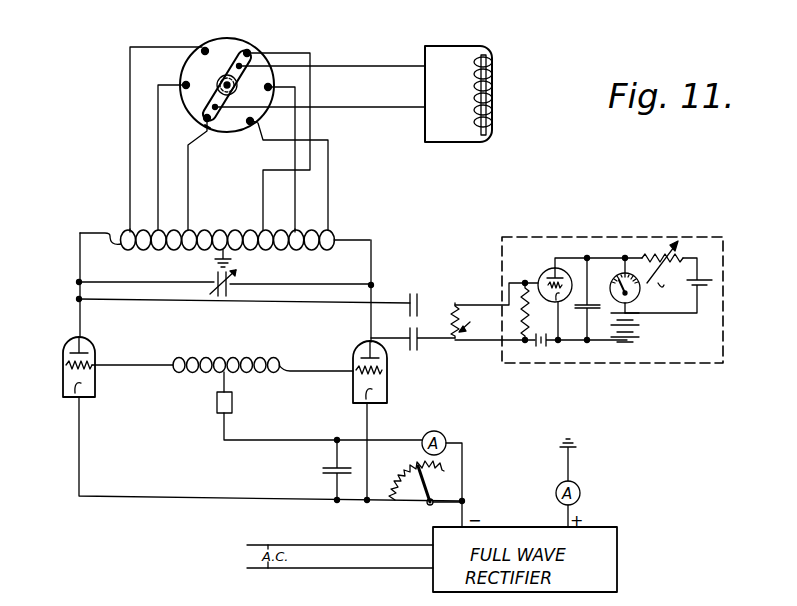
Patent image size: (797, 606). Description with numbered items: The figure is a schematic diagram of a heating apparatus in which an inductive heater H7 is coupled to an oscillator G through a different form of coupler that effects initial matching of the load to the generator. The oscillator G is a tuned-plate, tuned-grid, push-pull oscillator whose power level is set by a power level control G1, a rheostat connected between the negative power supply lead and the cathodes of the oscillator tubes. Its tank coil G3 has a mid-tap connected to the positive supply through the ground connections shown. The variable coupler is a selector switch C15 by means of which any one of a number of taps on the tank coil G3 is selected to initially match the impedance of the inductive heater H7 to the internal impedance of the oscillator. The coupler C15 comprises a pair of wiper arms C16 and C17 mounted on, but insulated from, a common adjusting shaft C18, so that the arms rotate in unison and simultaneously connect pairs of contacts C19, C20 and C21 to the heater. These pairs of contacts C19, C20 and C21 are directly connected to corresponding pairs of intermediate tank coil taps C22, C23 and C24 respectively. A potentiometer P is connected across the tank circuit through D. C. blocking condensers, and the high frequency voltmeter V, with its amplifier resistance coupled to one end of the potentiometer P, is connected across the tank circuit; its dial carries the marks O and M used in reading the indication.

The selector switch C15 is at (278, 46).
The wiper arm C16 is at (240, 55).
The wiper arm C17 is at (214, 122).
The common adjusting shaft C18 is at (222, 80).
The pair of contacts C19 is at (205, 47).
The pair of contacts C20 is at (182, 82).
The pair of contacts C21 is at (251, 50).
The intermediate tank coil taps C22 is at (122, 233).
The intermediate tank coil taps C23 is at (128, 229).
The intermediate tank coil taps C24 is at (252, 230).
The inductive heater H7 is at (496, 99).
The oscillator G is at (66, 414).
The power level control G1 is at (413, 494).
The tank coil G3 is at (257, 252).
The potentiometer P is at (458, 301).
The high frequency voltmeter V is at (612, 319).
The mark M is at (612, 279).
The mark O is at (658, 287).